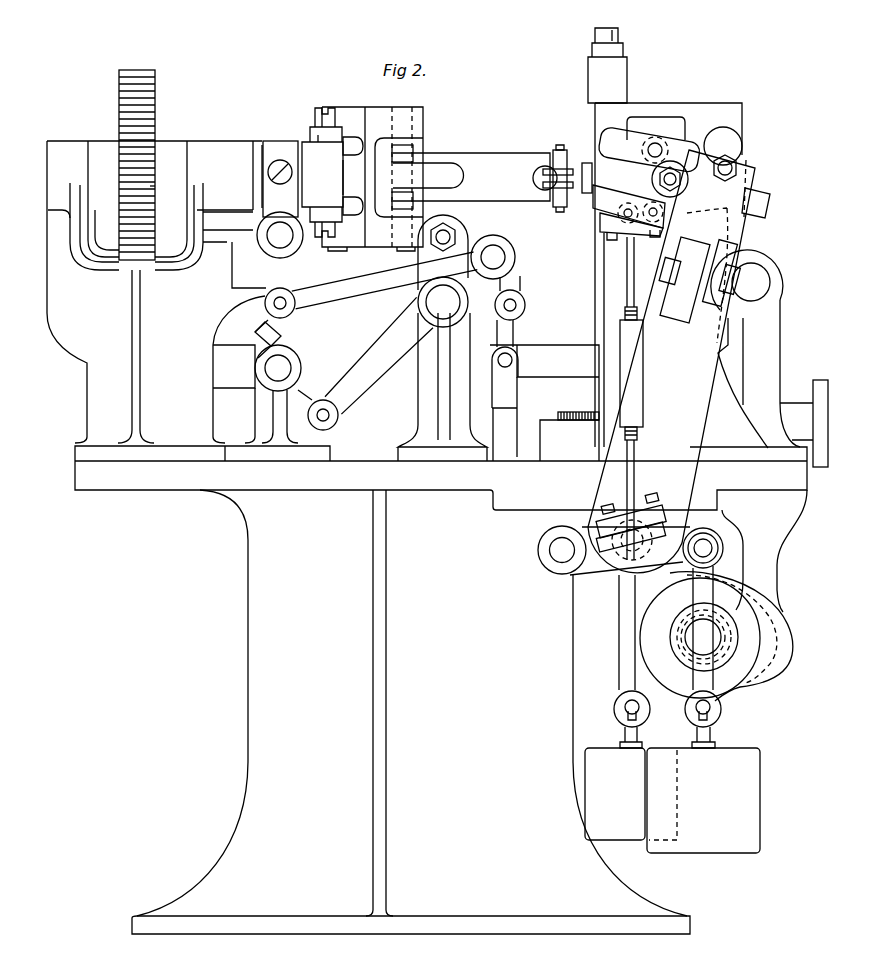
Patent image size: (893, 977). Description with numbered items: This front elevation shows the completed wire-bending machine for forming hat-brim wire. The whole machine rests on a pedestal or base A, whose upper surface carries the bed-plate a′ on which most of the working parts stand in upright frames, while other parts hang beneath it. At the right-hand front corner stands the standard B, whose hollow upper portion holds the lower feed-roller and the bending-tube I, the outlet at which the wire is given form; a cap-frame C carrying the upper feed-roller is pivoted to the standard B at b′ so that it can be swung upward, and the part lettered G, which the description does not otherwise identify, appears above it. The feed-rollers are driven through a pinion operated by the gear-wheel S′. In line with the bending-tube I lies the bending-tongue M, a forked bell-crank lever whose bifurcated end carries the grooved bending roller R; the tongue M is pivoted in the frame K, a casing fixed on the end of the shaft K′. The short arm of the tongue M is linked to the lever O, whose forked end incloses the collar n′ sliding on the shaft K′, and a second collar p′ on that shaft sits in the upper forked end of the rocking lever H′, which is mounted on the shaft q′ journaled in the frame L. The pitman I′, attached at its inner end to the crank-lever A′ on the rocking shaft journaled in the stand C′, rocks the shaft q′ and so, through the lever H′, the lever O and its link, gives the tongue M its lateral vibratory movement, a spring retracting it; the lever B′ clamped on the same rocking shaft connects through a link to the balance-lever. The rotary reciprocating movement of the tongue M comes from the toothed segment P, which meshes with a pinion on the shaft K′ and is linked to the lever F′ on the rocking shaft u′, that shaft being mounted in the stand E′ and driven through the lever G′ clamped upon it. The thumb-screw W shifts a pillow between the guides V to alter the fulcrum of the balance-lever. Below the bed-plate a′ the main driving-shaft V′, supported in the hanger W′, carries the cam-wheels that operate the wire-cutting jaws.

The standard or frame L is at (156, 292).
The toothed segment P is at (137, 154).
The rocking lever H′ is at (280, 179).
The collar p′ is at (284, 158).
The shaft q′ is at (280, 235).
The ring or collar n′ is at (367, 261).
The lever O is at (316, 142).
The frame K is at (372, 179).
The shaft K′ is at (352, 177).
The bending-tongue M is at (471, 177).
The grooved roller R is at (547, 162).
The bending-tube I is at (590, 193).
The screw head G is at (618, 38).
The cap-frame C is at (668, 275).
The pivot b′ is at (720, 152).
The standard B is at (748, 439).
The thumb-screw W is at (816, 423).
The pitman I′ is at (371, 285).
The crank-lever A′ is at (466, 249).
The lever B′ is at (504, 298).
The rocking shaft u′ is at (278, 368).
The lever F′ is at (247, 354).
The stand E′ is at (271, 415).
The lever G′ is at (318, 410).
The stand C′ is at (442, 387).
The gear-wheel S′ is at (544, 403).
The guides V is at (569, 436).
The bed-plate a′ is at (441, 478).
The pedestal or base A is at (411, 712).
The hanger W′ is at (745, 551).
The main driving-shaft V′ is at (733, 692).